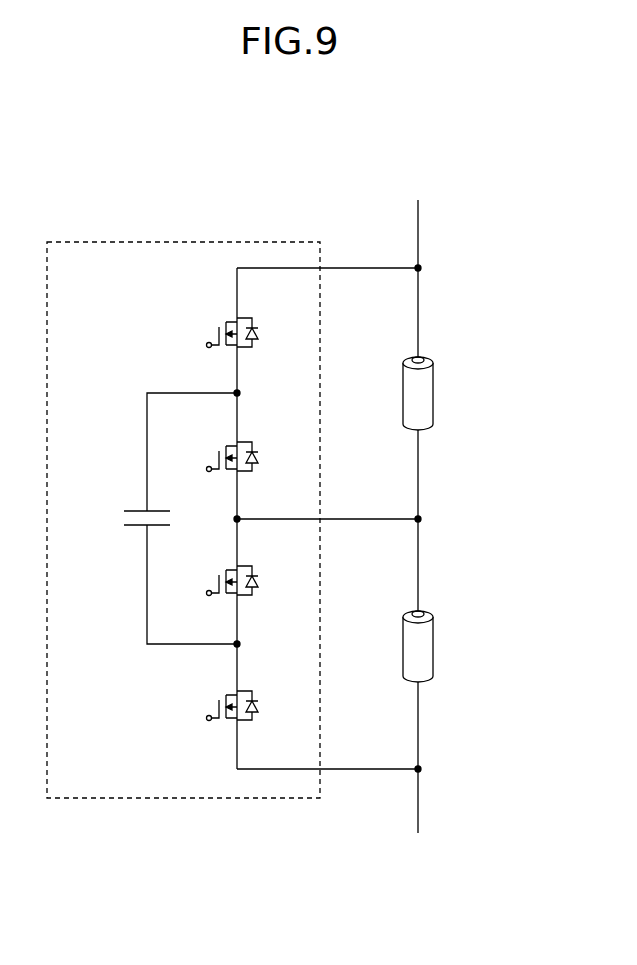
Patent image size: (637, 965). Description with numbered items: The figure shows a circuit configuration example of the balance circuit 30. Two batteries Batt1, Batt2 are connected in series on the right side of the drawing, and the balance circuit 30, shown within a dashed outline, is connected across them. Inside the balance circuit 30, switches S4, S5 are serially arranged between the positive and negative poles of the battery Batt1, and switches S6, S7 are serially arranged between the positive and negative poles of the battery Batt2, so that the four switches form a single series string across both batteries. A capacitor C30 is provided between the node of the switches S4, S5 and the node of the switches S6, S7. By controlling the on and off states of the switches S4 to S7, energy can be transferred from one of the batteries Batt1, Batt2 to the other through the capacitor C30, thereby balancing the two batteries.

The balance circuit 30 is at (77, 241).
The switch S4 is at (247, 333).
The switch S5 is at (247, 457).
The switch S6 is at (247, 581).
The switch S7 is at (247, 706).
The capacitor C30 is at (158, 518).
The battery Batt1 is at (442, 393).
The battery Batt2 is at (442, 646).